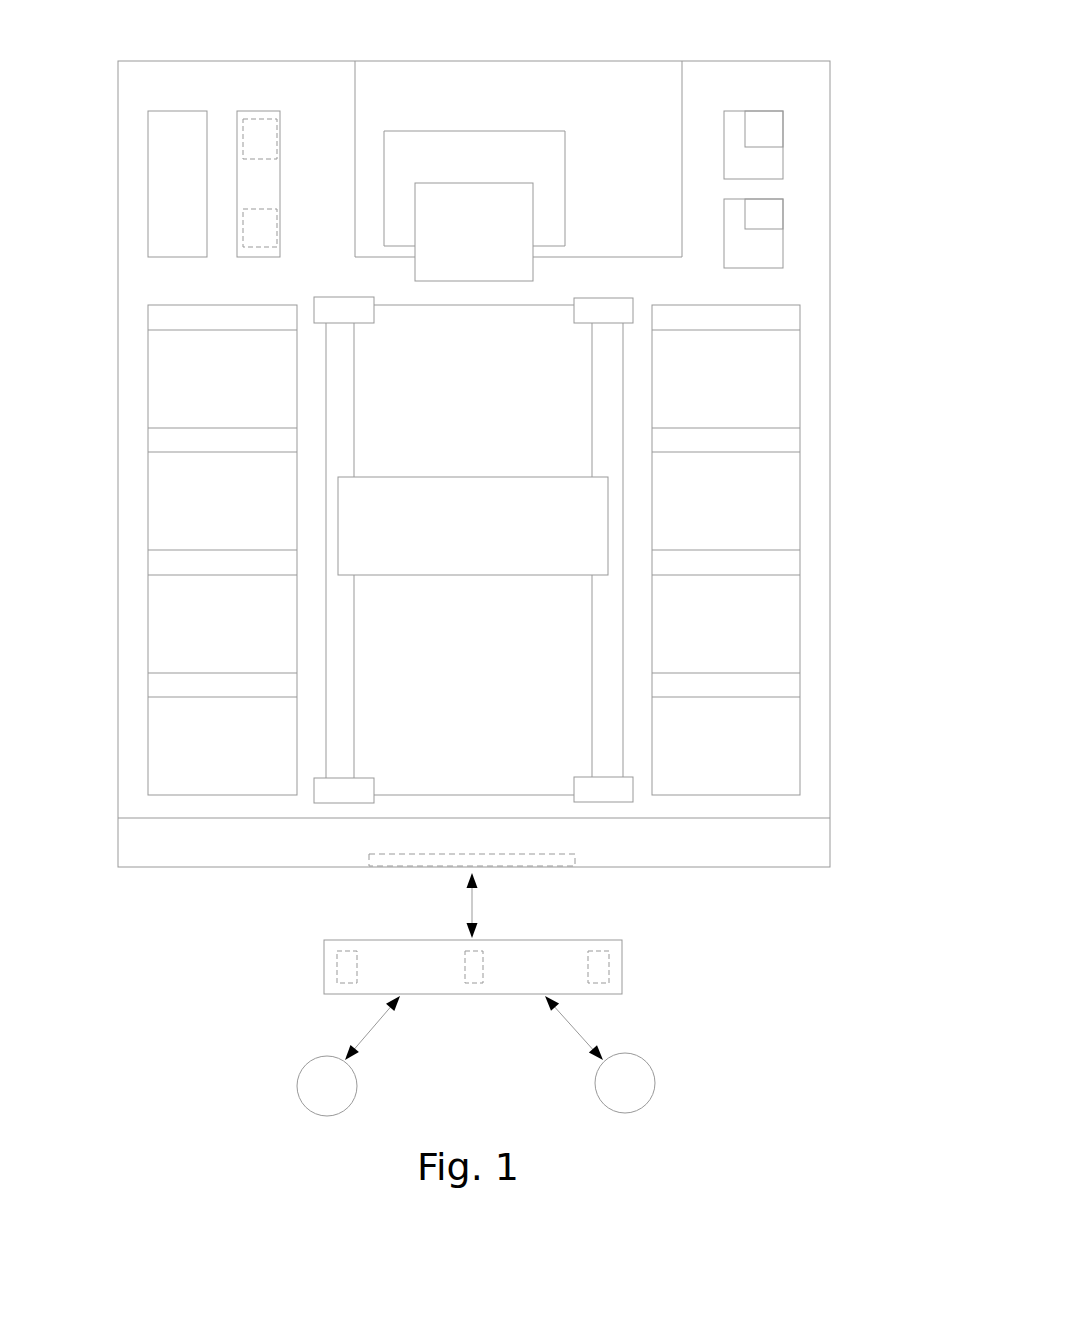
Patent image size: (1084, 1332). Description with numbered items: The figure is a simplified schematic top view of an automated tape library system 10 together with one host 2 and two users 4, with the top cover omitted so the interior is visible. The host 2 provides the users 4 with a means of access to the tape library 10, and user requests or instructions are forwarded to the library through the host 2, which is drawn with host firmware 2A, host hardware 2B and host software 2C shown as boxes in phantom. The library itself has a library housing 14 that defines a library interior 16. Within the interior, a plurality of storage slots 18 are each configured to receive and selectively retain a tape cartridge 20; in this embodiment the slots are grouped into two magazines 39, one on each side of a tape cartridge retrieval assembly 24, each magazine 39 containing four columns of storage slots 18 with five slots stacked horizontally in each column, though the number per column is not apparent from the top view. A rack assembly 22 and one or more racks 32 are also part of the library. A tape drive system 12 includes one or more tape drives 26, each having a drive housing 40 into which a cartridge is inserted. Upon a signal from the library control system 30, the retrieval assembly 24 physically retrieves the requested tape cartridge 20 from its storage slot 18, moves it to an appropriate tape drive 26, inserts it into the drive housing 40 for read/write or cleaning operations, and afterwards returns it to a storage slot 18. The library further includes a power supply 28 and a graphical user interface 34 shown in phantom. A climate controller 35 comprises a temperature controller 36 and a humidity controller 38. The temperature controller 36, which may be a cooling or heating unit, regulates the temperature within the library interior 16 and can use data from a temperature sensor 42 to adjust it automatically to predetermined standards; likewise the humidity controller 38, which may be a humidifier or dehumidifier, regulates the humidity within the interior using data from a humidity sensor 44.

The automated tape library system 10 is at (703, 43).
The tape drive system 12 is at (396, 56).
The library housing 14 is at (832, 384).
The library interior 16 is at (792, 76).
The storage slots 18 is at (160, 756).
The tape cartridge 20 is at (474, 232).
The rack assembly 22 is at (318, 810).
The tape cartridge retrieval assembly 24 is at (352, 518).
The tape drives 26 is at (484, 146).
The power supply 28 is at (148, 158).
The library control system 30 is at (262, 104).
The racks 32 is at (610, 803).
The graphical user interface 34 is at (385, 862).
The climate controller 35 is at (844, 205).
The temperature controller 36 is at (814, 159).
The humidity controller 38 is at (810, 249).
The magazines 39 is at (780, 803).
The drive housing 40 is at (512, 130).
The temperature sensor 42 is at (769, 128).
The humidity sensor 44 is at (770, 218).
The host 2 is at (485, 974).
The host firmware 2A is at (336, 975).
The host hardware 2B is at (484, 964).
The host software 2C is at (609, 979).
The users 4 is at (595, 1084).